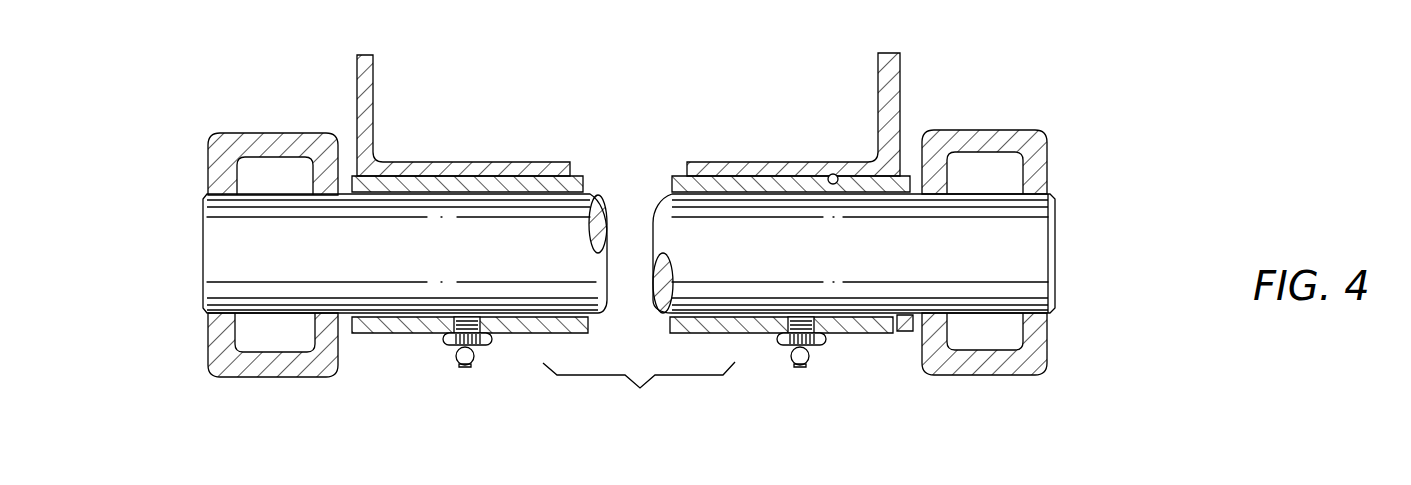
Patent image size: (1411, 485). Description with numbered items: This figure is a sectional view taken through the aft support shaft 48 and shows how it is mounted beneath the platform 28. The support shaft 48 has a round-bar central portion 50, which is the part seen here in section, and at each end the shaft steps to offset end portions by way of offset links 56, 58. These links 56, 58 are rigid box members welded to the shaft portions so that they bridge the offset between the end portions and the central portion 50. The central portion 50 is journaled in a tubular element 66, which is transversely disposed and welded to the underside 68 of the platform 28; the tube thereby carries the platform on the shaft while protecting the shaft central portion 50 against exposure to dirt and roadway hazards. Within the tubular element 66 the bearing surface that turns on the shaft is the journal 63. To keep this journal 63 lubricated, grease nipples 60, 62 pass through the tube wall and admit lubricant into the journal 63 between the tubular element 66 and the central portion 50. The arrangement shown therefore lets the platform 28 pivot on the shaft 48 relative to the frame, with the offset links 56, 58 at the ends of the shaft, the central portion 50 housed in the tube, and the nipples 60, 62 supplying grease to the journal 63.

The platform 28 is at (773, 162).
The aft support shaft 48 is at (626, 394).
The shaft central portion 50 is at (833, 246).
The offset link 56 is at (275, 133).
The offset link 58 is at (1050, 347).
The grease nipple 60 is at (477, 358).
The grease nipple 62 is at (810, 359).
The journal 63 is at (895, 333).
The aft tubular element 66 is at (403, 334).
The underside of the platform 68 is at (836, 174).